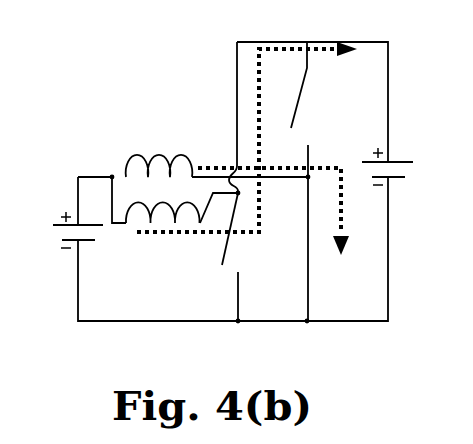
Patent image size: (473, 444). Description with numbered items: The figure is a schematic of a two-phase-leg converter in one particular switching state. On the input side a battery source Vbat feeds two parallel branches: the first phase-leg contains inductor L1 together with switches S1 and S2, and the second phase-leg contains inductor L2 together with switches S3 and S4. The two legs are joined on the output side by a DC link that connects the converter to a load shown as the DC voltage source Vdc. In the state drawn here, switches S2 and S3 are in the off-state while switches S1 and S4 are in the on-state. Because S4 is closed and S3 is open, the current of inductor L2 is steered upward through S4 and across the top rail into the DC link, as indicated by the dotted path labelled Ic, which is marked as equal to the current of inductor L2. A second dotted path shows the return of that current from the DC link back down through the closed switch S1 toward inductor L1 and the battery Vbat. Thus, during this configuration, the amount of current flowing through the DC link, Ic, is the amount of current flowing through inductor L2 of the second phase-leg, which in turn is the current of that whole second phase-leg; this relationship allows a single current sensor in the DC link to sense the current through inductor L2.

The inductor L1 is at (159, 152).
The inductor L2 is at (157, 226).
The switch S1 is at (324, 249).
The switch S2 is at (316, 109).
The switch S3 is at (218, 257).
The switch S4 is at (221, 116).
The battery voltage source Vbat is at (56, 230).
The DC voltage source Vdc is at (405, 166).
The DC link current Ic is at (265, 138).